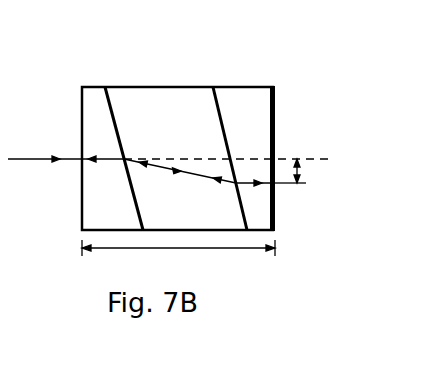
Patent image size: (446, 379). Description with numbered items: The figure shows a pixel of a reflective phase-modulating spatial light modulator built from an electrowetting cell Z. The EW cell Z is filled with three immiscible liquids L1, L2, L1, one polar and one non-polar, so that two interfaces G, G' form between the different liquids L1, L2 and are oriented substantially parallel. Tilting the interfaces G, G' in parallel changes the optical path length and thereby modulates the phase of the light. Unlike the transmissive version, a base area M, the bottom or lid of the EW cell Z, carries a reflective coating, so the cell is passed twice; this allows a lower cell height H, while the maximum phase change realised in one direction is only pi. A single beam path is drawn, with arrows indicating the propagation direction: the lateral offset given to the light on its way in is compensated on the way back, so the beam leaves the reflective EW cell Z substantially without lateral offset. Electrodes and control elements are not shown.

The EW cell Z is at (103, 74).
The interface G is at (124, 146).
The interface G' is at (232, 146).
The immiscible liquid L1 is at (172, 130).
The immiscible liquid L2 is at (166, 130).
The base area M is at (276, 222).
The height of the EW cell H is at (215, 248).